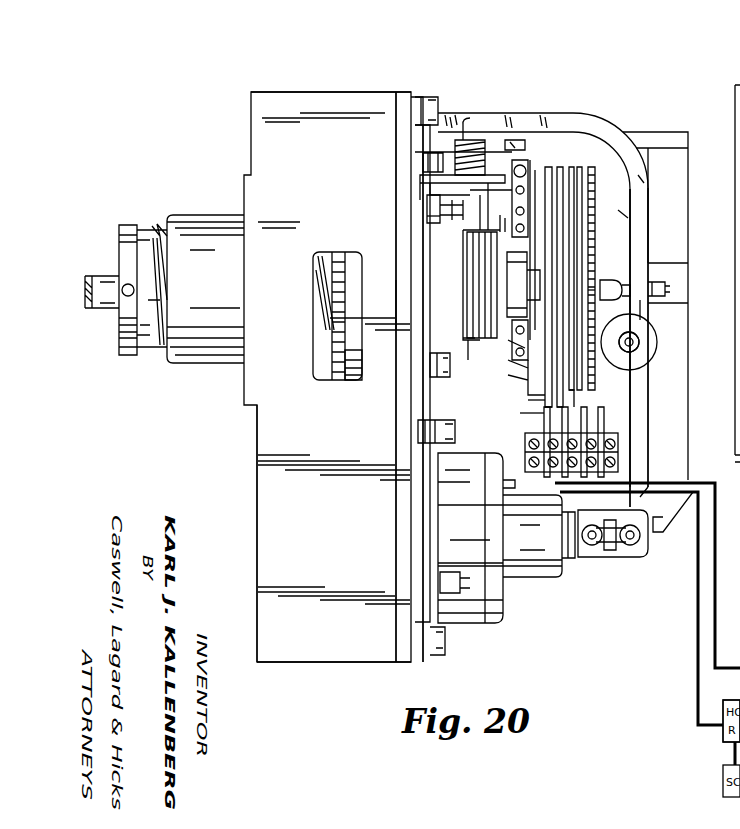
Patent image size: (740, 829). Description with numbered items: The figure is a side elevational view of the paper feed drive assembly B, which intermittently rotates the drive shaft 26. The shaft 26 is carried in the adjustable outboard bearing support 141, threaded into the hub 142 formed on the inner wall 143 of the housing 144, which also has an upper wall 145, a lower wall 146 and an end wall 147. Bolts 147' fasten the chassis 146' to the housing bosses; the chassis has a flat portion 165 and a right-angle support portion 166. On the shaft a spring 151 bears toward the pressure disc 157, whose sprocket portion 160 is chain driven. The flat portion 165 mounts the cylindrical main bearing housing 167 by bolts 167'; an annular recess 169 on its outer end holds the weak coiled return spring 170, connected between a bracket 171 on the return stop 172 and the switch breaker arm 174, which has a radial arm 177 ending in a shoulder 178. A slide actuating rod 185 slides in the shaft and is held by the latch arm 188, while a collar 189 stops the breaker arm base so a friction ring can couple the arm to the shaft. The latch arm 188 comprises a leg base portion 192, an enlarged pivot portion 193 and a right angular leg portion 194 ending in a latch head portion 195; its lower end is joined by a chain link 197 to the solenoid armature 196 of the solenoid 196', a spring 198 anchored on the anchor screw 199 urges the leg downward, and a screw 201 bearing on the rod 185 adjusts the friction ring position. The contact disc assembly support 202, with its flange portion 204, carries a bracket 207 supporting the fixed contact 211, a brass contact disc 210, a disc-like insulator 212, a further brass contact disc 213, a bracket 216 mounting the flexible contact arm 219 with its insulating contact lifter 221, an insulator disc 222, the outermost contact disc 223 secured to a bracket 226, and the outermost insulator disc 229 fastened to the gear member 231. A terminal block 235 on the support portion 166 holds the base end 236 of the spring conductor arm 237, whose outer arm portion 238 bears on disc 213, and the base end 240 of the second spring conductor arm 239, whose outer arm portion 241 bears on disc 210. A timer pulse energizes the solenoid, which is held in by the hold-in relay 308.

The drive shaft 26 is at (100, 305).
The adjustable outboard bearing support 141 is at (142, 238).
The hub 142 is at (204, 226).
The inner wall 143 is at (258, 460).
The housing 144 is at (328, 671).
The upper wall 145 is at (328, 92).
The lower wall 146 is at (373, 396).
The chassis 146' is at (683, 323).
The end wall 147 is at (516, 379).
The bolts 147' is at (452, 362).
The spring 151 is at (320, 335).
The pressure disc 157 is at (333, 366).
The sprocket portion 160 is at (336, 254).
The flat portion 165 is at (410, 418).
The support portion 166 is at (677, 122).
The main bearing housing 167 is at (387, 305).
The bolts 167' is at (406, 305).
The annular recess 169 is at (466, 349).
The coiled return spring 170 is at (480, 272).
The bracket 171 is at (478, 222).
The return stop 172 is at (418, 184).
The switch breaker arm 174 is at (499, 231).
The arm 177 is at (528, 170).
The shoulder 178 is at (528, 146).
The slide actuating rod 185 is at (607, 280).
The latch arm 188 is at (662, 216).
The collar 189 is at (515, 305).
The leg base portion 192 is at (642, 420).
The enlarged portion 193 is at (655, 347).
The right angular leg portion 194 is at (540, 110).
The latch head portion 195 is at (415, 145).
The solenoid armature 196 is at (613, 547).
The solenoid 196' is at (506, 538).
The chain link 197 is at (630, 548).
The spring 198 is at (478, 140).
The anchor screw 199 is at (427, 207).
The screw 201 is at (668, 287).
The contact disc assembly support 202 is at (610, 213).
The flange portion 204 is at (568, 208).
The bracket 207 is at (564, 198).
The brass contact disc 210 is at (560, 238).
The fixed contact 211 is at (512, 190).
The disc-like insulator 212 is at (570, 250).
The brass contact disc 213 is at (575, 320).
The bracket 216 is at (524, 350).
The flexible contact arm 219 is at (528, 366).
The insulating contact lifter 221 is at (559, 246).
The insulator disc 222 is at (598, 170).
The outermost contact disc 223 is at (629, 342).
The bracket 226 is at (525, 385).
The outermost insulator disc 229 is at (625, 346).
The gear member 231 is at (612, 176).
The terminal block 235 is at (620, 441).
The base end 236 is at (582, 420).
The spring conductor arm 237 is at (570, 401).
The outer arm portion 238 is at (556, 395).
The second spring conductor arm 239 is at (512, 413).
The base end 240 is at (528, 478).
The outer arm portion 241 is at (545, 400).
The hold-in relay 308 is at (723, 735).
The paper feed drive assembly B is at (212, 441).